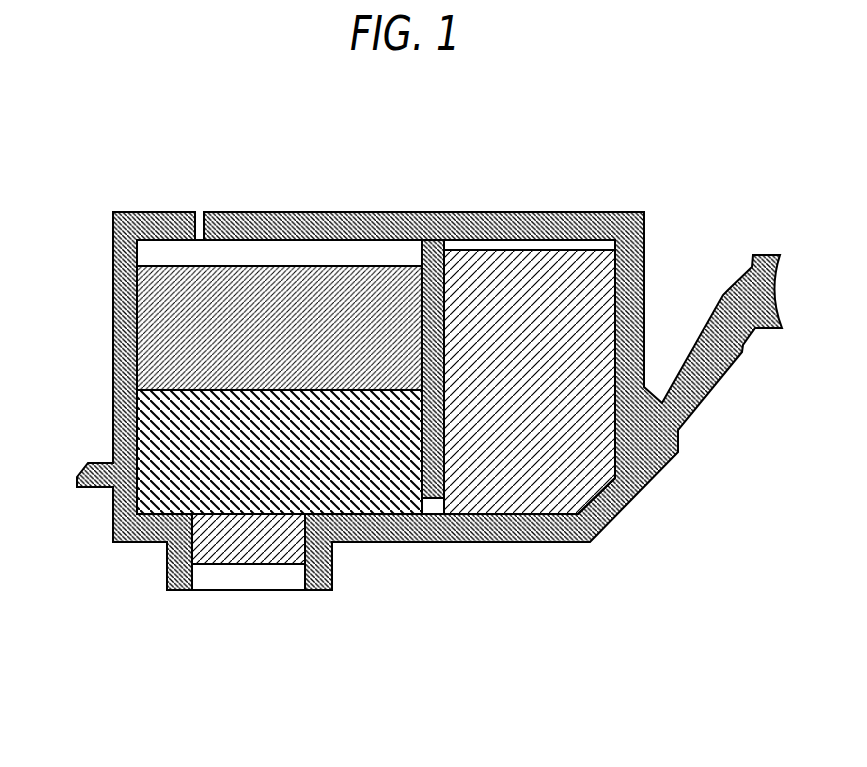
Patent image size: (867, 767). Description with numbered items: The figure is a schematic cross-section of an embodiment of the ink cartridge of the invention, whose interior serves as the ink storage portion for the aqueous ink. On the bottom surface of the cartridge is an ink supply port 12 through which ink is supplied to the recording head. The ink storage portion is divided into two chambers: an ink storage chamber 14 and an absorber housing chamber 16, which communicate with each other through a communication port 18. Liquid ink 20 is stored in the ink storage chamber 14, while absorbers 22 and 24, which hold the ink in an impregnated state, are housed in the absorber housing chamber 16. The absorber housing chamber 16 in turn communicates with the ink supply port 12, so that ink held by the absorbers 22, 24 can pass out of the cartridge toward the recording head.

The ink supply port 12 is at (253, 578).
The ink storage chamber 14 is at (578, 250).
The absorber housing chamber 16 is at (262, 257).
The communication port 18 is at (432, 505).
The liquid ink 20 is at (558, 480).
The absorber 22 is at (158, 428).
The absorber 24 is at (188, 326).